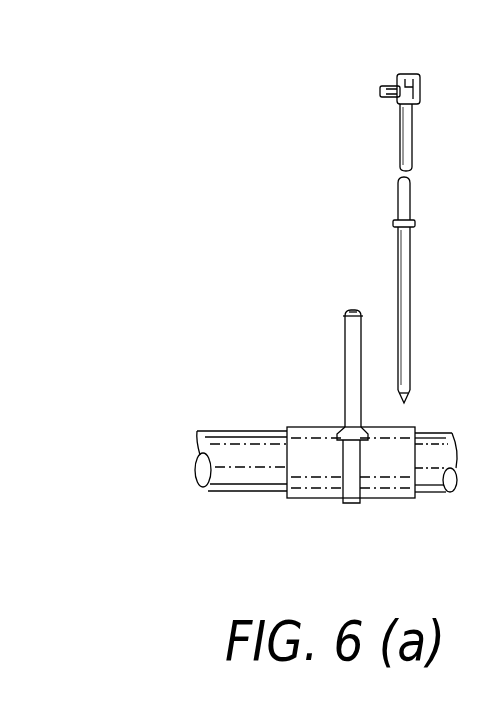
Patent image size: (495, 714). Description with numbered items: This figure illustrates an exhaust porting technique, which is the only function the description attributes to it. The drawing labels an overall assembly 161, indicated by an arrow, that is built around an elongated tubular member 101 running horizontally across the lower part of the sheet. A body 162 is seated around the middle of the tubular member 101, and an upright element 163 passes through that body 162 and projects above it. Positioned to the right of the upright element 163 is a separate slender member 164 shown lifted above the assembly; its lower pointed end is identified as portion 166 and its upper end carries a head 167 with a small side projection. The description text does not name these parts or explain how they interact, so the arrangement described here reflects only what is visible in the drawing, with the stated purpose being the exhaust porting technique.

The fixing unit 161 is at (200, 376).
The pipe 101 is at (440, 478).
The clamp 162 is at (311, 498).
The pin 163 is at (345, 342).
The rod 164 is at (397, 222).
The tip 166 is at (393, 400).
The head 167 is at (398, 74).